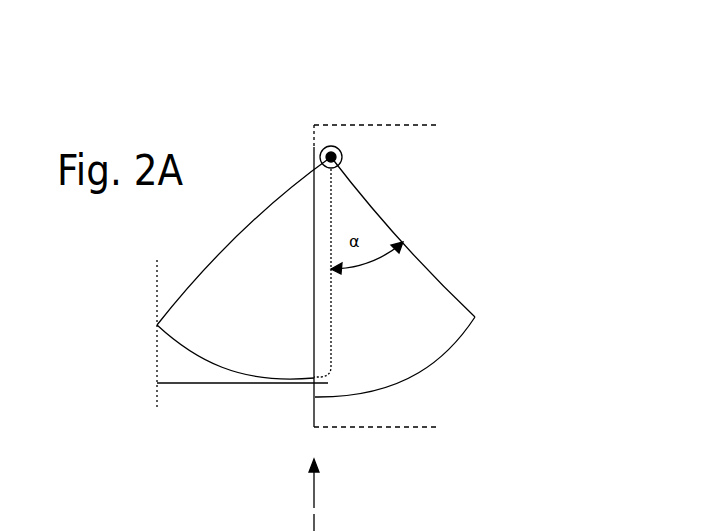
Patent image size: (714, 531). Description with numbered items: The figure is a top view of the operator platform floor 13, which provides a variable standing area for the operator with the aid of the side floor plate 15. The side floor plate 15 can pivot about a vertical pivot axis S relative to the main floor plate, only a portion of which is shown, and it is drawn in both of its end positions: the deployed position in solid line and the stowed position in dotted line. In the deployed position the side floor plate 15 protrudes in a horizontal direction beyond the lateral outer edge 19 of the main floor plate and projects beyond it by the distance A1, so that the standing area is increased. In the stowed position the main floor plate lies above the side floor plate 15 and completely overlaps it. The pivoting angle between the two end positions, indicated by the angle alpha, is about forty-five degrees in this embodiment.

The operator platform floor 13 is at (423, 100).
The side floor plate 15 is at (187, 327).
The lateral outer edge 19 is at (314, 419).
The pivot axis S is at (320, 149).
The distance A1 is at (242, 342).